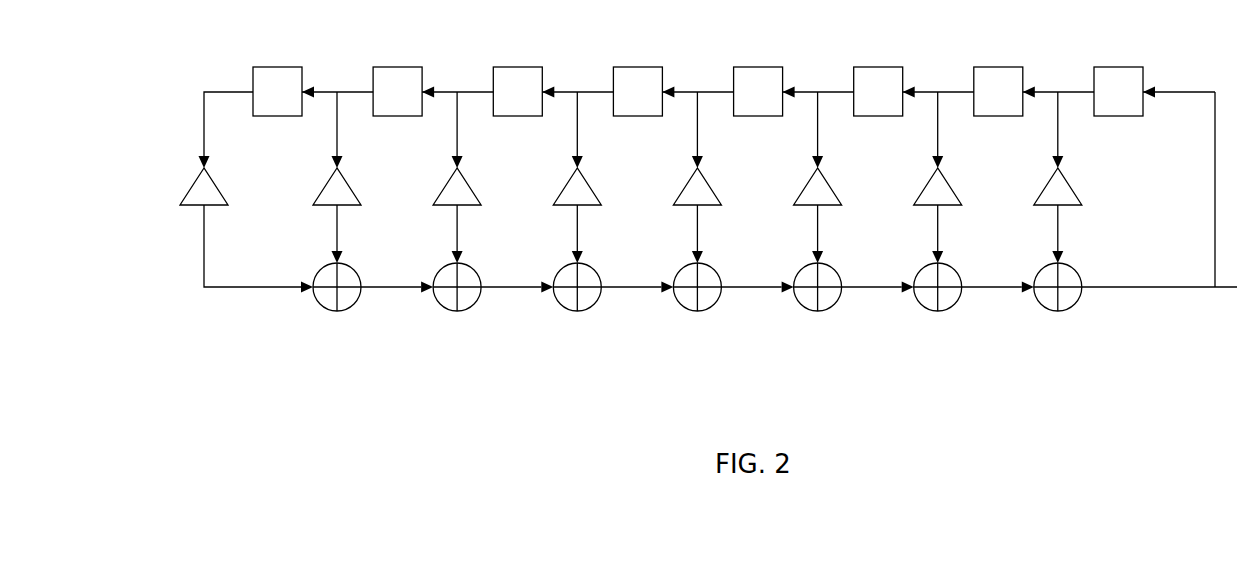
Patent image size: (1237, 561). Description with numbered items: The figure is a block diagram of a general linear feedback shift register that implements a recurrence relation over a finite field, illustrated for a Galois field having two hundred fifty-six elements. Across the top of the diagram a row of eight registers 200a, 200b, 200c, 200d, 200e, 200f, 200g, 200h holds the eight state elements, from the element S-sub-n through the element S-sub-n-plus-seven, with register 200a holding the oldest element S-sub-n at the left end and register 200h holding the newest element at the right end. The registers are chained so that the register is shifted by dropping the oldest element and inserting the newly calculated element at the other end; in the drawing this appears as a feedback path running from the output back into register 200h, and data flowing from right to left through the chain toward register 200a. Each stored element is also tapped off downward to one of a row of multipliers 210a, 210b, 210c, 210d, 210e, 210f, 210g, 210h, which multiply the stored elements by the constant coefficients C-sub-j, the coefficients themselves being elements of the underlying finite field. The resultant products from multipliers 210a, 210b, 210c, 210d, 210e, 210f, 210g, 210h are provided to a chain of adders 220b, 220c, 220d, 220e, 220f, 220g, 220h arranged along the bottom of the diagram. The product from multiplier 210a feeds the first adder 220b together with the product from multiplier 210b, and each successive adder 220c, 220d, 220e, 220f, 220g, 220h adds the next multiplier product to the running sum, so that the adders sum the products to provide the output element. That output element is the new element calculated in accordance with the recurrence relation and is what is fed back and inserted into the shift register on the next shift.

The register 200a is at (282, 67).
The register 200b is at (402, 67).
The register 200c is at (522, 67).
The register 200d is at (642, 67).
The register 200e is at (763, 67).
The register 200f is at (883, 67).
The register 200g is at (1003, 67).
The register 200h is at (1123, 67).
The multiplier 210a is at (193, 186).
The multiplier 210b is at (326, 186).
The multiplier 210c is at (446, 186).
The multiplier 210d is at (566, 186).
The multiplier 210e is at (686, 186).
The multiplier 210f is at (807, 186).
The multiplier 210g is at (927, 186).
The multiplier 210h is at (1047, 186).
The adder 220b is at (358, 276).
The adder 220c is at (478, 276).
The adder 220d is at (598, 276).
The adder 220e is at (718, 276).
The adder 220f is at (839, 276).
The adder 220g is at (959, 276).
The adder 220h is at (1079, 276).